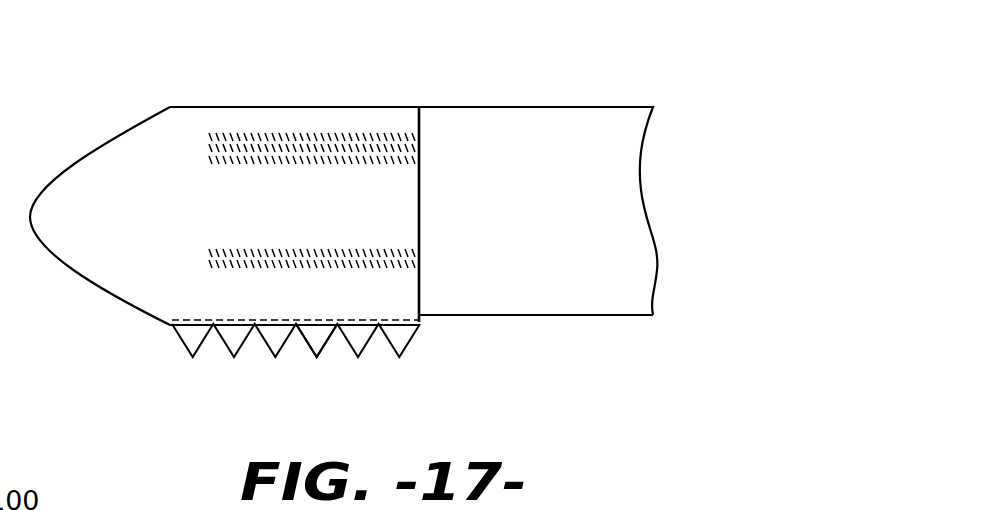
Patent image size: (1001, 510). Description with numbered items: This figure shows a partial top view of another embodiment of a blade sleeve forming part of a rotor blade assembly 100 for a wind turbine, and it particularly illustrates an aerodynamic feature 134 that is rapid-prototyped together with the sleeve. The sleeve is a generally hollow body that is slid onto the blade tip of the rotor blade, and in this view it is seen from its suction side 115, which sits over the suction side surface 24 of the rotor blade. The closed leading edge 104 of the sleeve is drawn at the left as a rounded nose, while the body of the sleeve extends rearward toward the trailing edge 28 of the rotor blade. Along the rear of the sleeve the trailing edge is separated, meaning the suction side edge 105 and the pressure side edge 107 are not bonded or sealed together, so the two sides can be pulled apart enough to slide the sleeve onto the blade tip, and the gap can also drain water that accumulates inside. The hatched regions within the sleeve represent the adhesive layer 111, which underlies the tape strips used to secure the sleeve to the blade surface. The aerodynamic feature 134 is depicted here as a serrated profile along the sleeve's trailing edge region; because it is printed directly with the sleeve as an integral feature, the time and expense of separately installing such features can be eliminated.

The rotor blade assembly 100 is at (450, 72).
The suction side 115 is at (125, 123).
The closed leading edge 104 is at (250, 107).
The adhesive layer 111 is at (211, 149).
The pressure side edge 107 is at (303, 320).
The suction side edge 105 is at (250, 332).
The aerodynamic feature 134 is at (323, 343).
The suction side surface 24 is at (560, 118).
The trailing edge 28 is at (560, 316).